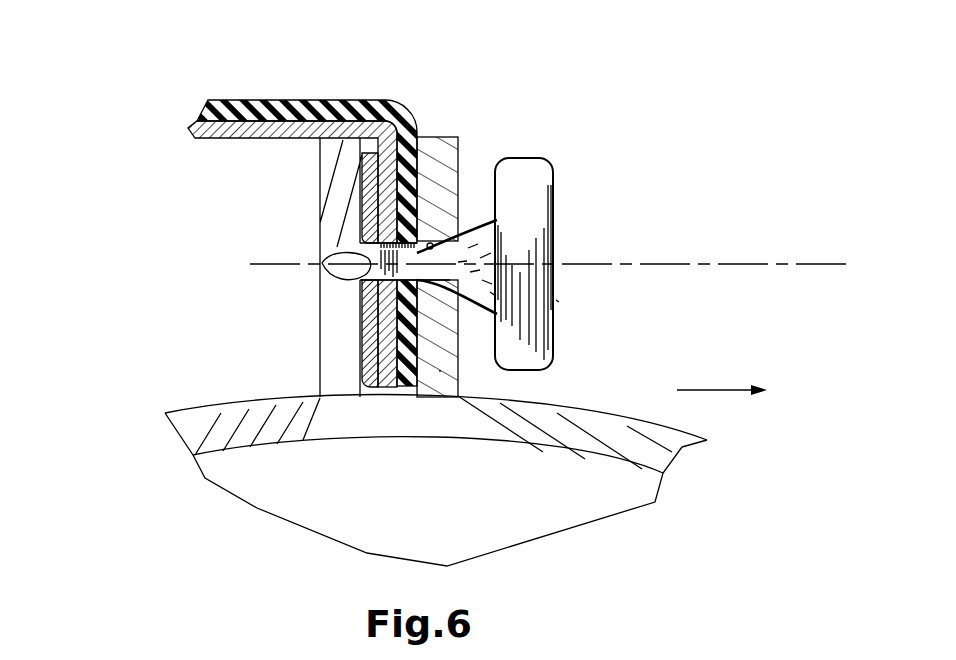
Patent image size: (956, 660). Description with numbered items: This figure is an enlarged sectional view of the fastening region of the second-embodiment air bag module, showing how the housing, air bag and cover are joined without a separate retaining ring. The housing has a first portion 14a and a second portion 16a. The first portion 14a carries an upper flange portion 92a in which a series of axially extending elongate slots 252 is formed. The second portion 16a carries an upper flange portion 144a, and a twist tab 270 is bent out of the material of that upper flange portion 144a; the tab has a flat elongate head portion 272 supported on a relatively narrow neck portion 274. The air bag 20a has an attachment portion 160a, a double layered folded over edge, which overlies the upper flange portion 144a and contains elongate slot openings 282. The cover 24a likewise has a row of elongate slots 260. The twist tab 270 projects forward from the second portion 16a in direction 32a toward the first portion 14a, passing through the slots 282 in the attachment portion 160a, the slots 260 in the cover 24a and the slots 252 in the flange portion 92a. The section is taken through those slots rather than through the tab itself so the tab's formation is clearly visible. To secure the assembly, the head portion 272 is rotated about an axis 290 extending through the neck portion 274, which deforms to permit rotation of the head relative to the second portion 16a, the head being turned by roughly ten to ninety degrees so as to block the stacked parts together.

The cover 24a is at (282, 100).
The air bag 20a is at (214, 141).
The attachment portion 160a is at (377, 383).
The upper flange portion 144a is at (320, 168).
The upper flange portion 92a is at (447, 153).
The elongate slots 252 is at (425, 240).
The neck portion 274 is at (457, 240).
The fastener openings 282 is at (352, 273).
The head portion 272 is at (518, 217).
The twist tab 270 is at (557, 304).
The axis 290 is at (743, 260).
The direction 32a is at (707, 390).
The first portion 14a is at (690, 455).
The second portion 16a is at (172, 436).
The elongate slots 260 is at (426, 288).